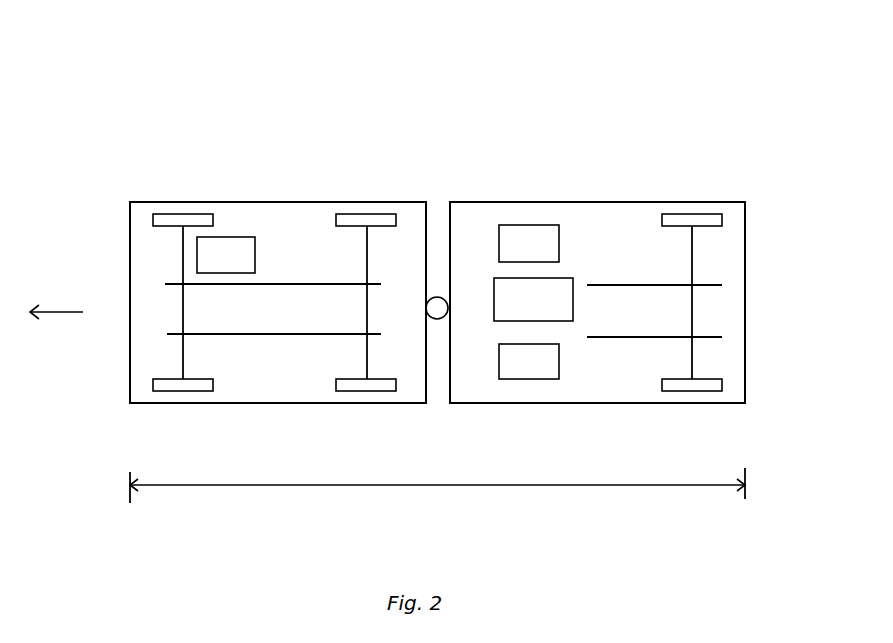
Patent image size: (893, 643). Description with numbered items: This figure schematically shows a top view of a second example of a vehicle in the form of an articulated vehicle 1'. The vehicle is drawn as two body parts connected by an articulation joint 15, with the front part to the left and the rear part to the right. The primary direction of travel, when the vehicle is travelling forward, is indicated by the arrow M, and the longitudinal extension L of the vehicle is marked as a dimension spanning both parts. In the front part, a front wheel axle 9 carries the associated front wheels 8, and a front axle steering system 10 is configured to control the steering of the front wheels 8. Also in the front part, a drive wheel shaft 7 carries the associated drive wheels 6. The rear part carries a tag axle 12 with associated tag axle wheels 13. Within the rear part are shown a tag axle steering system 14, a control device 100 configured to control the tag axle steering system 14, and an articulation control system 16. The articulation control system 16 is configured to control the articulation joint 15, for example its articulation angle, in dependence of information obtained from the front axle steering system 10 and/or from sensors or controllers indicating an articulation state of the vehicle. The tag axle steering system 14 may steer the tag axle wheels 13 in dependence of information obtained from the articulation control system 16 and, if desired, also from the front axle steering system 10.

The articulated vehicle 1' is at (652, 83).
The drive wheels 6 is at (356, 214).
The drive wheel shaft 7 is at (366, 310).
The front wheels 8 is at (187, 214).
The front wheel axle 9 is at (183, 322).
The front axle steering system 10 is at (226, 255).
The tag axle 12 is at (696, 314).
The tag axle wheels 13 is at (697, 216).
The tag axle steering system 14 is at (529, 243).
The articulation joint 15 is at (437, 297).
The articulation control system 16 is at (529, 361).
The control device 100 is at (533, 299).
The primary direction of travel M is at (70, 312).
The longitudinal extension L is at (437, 481).